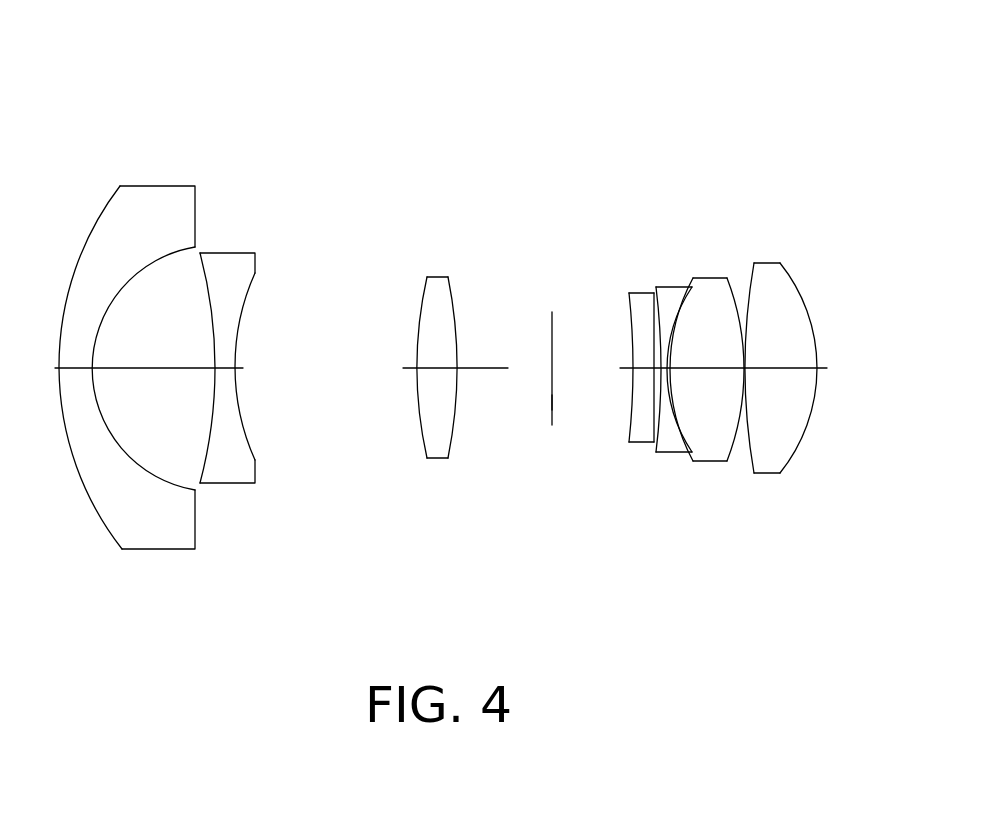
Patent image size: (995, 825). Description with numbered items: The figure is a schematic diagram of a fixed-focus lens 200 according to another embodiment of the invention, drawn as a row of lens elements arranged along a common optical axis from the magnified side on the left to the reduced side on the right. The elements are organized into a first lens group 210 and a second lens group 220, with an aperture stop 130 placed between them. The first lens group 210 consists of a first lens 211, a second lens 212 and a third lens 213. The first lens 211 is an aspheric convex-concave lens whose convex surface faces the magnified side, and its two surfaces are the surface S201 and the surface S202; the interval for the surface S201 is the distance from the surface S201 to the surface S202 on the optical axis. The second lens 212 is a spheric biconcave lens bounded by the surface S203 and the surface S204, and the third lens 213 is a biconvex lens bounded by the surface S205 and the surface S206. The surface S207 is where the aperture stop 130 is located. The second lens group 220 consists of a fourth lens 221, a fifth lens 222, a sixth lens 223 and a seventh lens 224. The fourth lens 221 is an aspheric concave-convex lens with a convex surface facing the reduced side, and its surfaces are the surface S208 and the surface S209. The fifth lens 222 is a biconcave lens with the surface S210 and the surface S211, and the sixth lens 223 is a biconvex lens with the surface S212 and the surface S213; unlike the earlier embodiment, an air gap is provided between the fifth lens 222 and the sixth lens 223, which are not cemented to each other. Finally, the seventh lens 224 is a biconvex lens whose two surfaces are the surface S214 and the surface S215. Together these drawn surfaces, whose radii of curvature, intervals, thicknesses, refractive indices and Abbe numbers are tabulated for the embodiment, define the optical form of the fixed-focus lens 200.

The fixed-focus lens 200 is at (802, 613).
The first lens group 210 is at (483, 92).
The first lens 211 is at (133, 203).
The second lens 212 is at (219, 273).
The third lens 213 is at (439, 303).
The aperture stop 130 is at (551, 397).
The second lens group 220 is at (857, 93).
The fourth lens 221 is at (640, 320).
The fifth lens 222 is at (675, 300).
The sixth lens 223 is at (712, 320).
The seventh lens 224 is at (760, 317).
The surface S201 is at (85, 489).
The surface S202 is at (153, 465).
The surface S203 is at (206, 290).
The surface S204 is at (258, 298).
The surface S205 is at (416, 327).
The surface S206 is at (457, 330).
The surface S207 is at (553, 405).
The surface S208 is at (630, 345).
The surface S209 is at (658, 325).
The surface S210 is at (655, 422).
The surface S211 is at (679, 418).
The surface S212 is at (675, 313).
The surface S213 is at (738, 308).
The surface S214 is at (748, 420).
The surface S215 is at (808, 308).